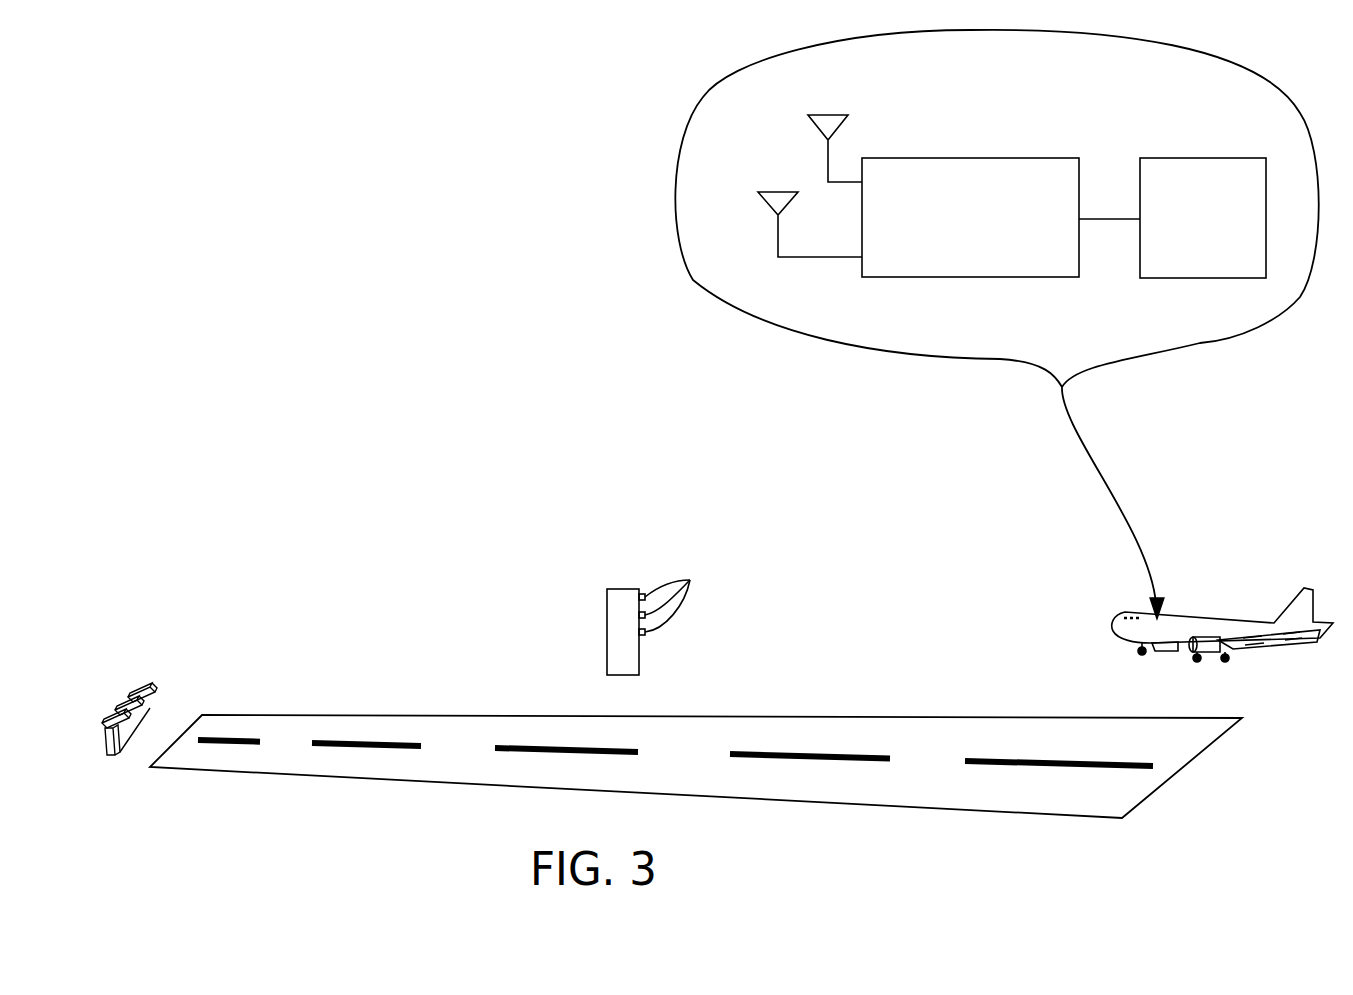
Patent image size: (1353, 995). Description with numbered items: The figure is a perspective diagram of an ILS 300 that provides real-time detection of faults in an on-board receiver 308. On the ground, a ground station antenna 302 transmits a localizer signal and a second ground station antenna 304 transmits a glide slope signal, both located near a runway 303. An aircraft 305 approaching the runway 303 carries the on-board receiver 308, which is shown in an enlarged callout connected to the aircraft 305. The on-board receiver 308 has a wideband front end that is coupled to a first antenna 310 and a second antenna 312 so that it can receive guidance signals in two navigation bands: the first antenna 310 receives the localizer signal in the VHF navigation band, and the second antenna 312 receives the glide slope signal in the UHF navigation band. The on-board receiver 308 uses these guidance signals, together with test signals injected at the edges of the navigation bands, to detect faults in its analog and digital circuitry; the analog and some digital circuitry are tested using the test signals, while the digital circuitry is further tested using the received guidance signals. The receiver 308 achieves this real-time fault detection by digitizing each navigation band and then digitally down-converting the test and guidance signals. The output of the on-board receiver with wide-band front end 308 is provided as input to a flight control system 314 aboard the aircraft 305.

The ILS 300 is at (425, 244).
The ground station antenna 302 is at (150, 710).
The runway 303 is at (877, 787).
The ground station antenna 304 is at (667, 613).
The aircraft 305 is at (1185, 610).
The on-board receiver 308 is at (952, 158).
The first antenna 310 is at (843, 126).
The second antenna 312 is at (765, 198).
The flight control system 314 is at (1155, 158).